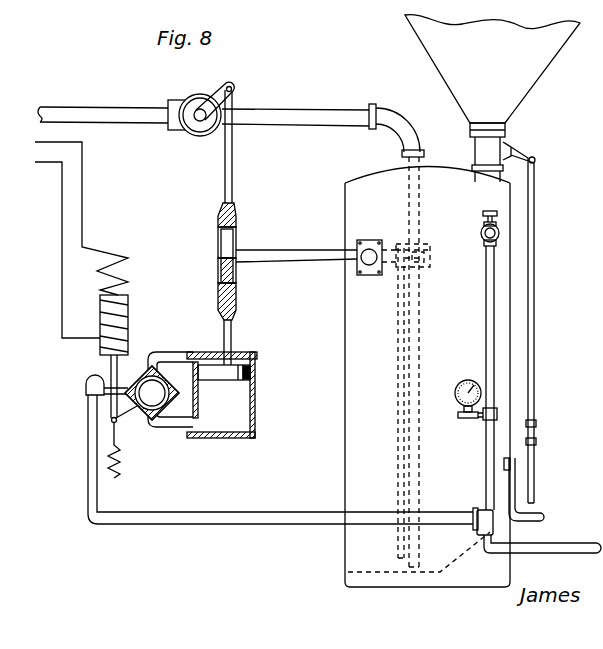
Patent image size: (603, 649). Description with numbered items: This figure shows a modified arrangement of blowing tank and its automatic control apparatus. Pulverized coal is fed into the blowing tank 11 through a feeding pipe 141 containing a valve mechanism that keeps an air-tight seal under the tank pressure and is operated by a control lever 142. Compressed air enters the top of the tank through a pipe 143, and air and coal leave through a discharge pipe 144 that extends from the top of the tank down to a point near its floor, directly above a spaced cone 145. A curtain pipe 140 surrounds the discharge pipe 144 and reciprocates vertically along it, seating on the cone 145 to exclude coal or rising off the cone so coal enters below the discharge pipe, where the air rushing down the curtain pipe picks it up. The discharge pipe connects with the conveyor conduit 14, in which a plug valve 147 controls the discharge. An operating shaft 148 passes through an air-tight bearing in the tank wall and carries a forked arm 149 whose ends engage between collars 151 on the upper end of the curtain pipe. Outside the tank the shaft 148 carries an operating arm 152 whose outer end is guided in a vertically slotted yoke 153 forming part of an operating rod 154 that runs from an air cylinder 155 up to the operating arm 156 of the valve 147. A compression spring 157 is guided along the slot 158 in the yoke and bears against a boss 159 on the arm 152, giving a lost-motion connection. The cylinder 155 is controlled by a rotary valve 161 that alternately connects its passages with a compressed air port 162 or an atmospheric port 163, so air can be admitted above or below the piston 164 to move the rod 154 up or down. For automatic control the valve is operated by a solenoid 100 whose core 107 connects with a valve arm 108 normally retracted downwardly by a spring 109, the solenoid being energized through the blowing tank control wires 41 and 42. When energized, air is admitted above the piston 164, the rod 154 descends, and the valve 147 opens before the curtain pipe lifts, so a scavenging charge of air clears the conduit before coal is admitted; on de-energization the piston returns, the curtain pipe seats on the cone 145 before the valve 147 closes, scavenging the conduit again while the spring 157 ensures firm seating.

The blowing tank 11 is at (355, 215).
The conveyor conduit 14 is at (295, 124).
The blowing tank control wire 41 is at (82, 205).
The blowing tank control wire 42 is at (62, 205).
The solenoid 100 is at (128, 310).
The solenoid plunger 107 is at (128, 349).
The link 108 is at (111, 420).
The spring 109 is at (106, 459).
The discharge pipe 140 is at (398, 398).
The feeding pipe 141 is at (504, 144).
The control lever 142 is at (531, 484).
The pipe 143 is at (492, 335).
The discharge pipe 144 is at (420, 212).
The cone 145 is at (413, 578).
The plug valve 147 is at (191, 134).
The operating shaft 148 is at (357, 266).
The forked arm 149 is at (396, 266).
The collars 151 is at (430, 262).
The operating arm 152 is at (281, 258).
The vertically slotted yoke 153 is at (218, 220).
The operating rod 154 is at (225, 187).
The air cylinder 155 is at (257, 383).
The operating arm 156 is at (223, 89).
The compression spring 157 is at (218, 286).
The slot 158 is at (221, 268).
The boss 159 is at (225, 252).
The rotary valve 161 is at (160, 428).
The compressed air port 162 is at (125, 388).
The atmospheric port 163 is at (170, 392).
The piston 164 is at (255, 371).